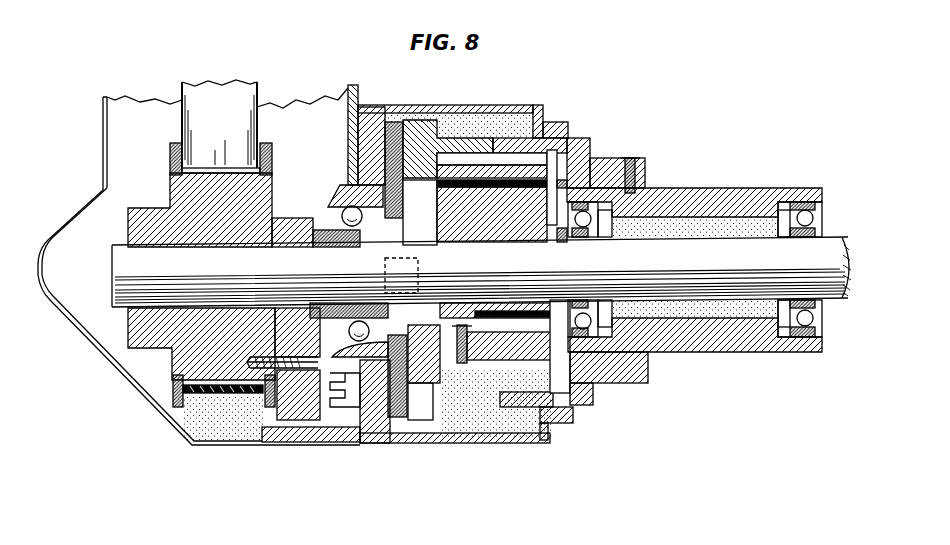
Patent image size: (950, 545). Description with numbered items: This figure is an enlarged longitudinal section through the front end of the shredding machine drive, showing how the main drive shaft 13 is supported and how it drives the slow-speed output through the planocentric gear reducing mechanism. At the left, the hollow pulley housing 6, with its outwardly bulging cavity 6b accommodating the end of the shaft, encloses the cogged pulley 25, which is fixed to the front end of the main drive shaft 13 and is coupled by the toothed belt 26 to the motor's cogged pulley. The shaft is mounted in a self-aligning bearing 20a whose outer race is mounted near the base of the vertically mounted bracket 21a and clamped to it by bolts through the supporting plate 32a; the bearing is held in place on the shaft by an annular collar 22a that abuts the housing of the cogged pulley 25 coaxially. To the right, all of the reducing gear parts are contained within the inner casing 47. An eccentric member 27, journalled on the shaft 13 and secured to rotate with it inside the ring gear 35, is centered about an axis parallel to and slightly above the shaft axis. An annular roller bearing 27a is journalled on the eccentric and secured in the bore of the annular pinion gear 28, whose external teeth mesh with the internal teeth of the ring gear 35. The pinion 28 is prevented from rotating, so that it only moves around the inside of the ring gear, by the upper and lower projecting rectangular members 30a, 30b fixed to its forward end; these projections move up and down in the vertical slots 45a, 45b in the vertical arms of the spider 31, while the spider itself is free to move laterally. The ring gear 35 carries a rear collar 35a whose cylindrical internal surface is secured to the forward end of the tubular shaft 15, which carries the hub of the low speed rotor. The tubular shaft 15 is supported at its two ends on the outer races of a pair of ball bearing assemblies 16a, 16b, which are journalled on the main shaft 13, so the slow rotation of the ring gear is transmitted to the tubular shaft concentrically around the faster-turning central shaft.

The pulley housing 6 is at (103, 132).
The outwardly bulging cavity 6b is at (75, 225).
The toothed belt 26 is at (222, 92).
The cogged pulley 25 is at (137, 345).
The annular collar 22a is at (293, 223).
The self-aligning bearing 20a is at (350, 195).
The vertically mounted bracket 21a is at (352, 82).
The supporting plate 32a is at (378, 130).
The spider 31 is at (400, 405).
The vertical slot 45a is at (417, 200).
The vertical slot 45b is at (428, 400).
The projecting rectangular member 30a is at (420, 135).
The projecting rectangular member 30b is at (465, 378).
The inner casing 47 is at (530, 105).
The annular pinion gear 28 is at (495, 163).
The annular roller bearing 27a is at (500, 200).
The eccentric member 27 is at (582, 165).
The ring gear 35 is at (588, 140).
The rear collar of ring gear 35a is at (612, 160).
The tubular shaft 15 is at (712, 197).
The ball bearing assembly 16a is at (583, 232).
The ball bearing assembly 16b is at (800, 200).
The main drive shaft 13 is at (772, 264).